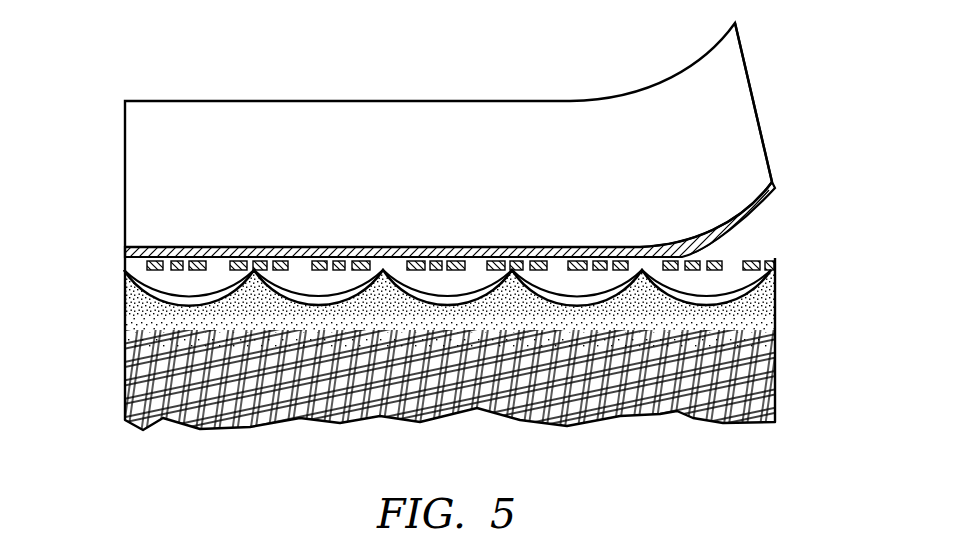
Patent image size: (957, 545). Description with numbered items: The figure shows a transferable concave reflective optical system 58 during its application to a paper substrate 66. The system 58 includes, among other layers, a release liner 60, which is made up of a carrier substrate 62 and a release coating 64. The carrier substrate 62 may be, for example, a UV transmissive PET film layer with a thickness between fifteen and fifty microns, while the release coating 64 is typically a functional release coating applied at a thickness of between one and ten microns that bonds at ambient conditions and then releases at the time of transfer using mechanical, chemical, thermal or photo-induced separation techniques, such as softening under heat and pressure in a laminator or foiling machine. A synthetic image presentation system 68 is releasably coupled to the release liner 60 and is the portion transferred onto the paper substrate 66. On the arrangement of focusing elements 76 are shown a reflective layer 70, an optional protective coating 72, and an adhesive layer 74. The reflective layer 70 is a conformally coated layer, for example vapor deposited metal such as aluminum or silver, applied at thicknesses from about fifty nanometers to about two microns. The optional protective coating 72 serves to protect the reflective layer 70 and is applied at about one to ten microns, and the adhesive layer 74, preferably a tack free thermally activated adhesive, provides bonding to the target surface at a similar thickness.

The transferable concave reflective optical system 58 is at (78, 206).
The release liner 60 is at (778, 97).
The carrier substrate 62 is at (506, 173).
The release coating 64 is at (788, 192).
The paper substrate 66 is at (735, 413).
The synthetic image presentation system 68 is at (485, 271).
The reflective layer 70 is at (135, 324).
The protective coating 72 is at (193, 308).
The adhesive layer 74 is at (392, 295).
The focusing elements 76 is at (318, 288).